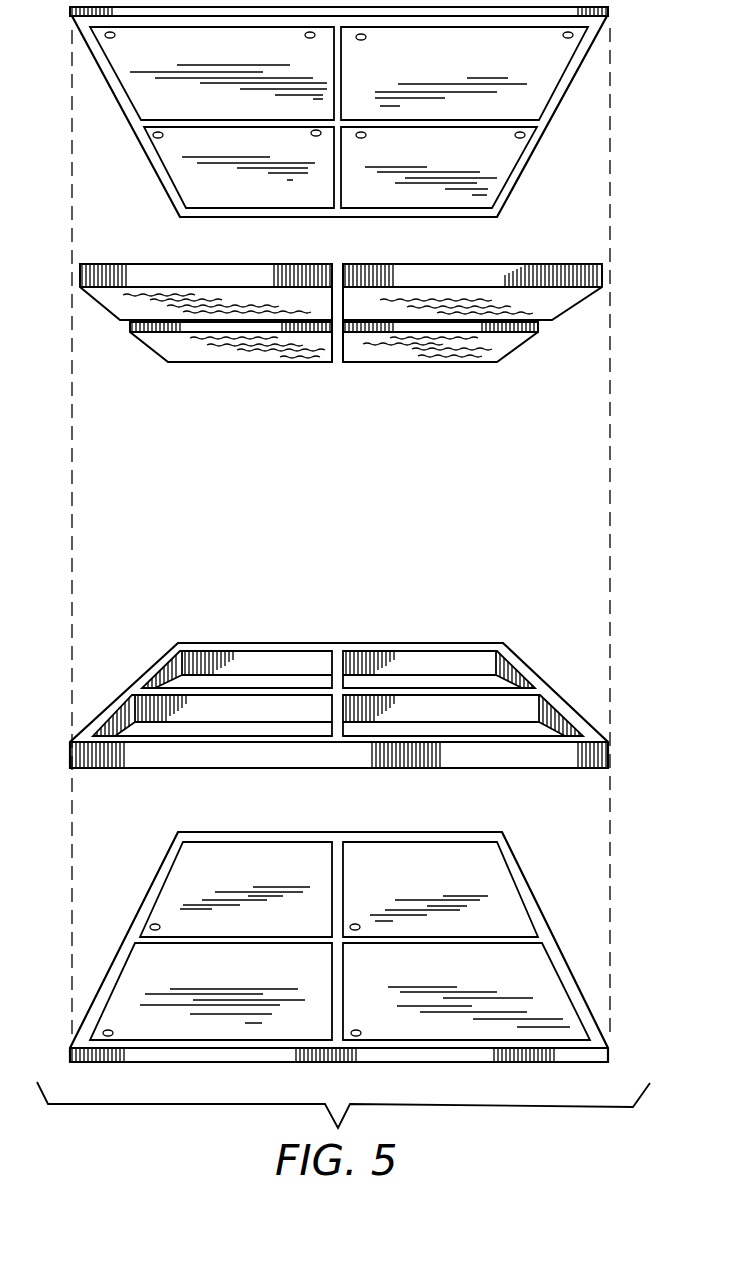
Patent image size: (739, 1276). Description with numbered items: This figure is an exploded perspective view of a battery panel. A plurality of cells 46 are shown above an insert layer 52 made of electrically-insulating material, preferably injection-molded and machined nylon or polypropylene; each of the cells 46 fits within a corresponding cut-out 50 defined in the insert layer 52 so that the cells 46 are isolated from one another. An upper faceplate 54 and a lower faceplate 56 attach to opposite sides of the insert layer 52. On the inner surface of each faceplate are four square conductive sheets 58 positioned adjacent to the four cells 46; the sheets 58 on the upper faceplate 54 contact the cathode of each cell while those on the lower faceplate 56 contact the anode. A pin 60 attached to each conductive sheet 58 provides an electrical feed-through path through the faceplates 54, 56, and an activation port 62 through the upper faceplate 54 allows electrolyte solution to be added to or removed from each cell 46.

The cells 46 is at (420, 308).
The cut-outs 50 is at (418, 683).
The insert layer 52 is at (339, 668).
The upper faceplate 54 is at (560, 125).
The lower faceplate 56 is at (550, 912).
The conductive sheets 58 is at (540, 85).
The pin 60 is at (572, 38).
The activation port 62 is at (366, 38).